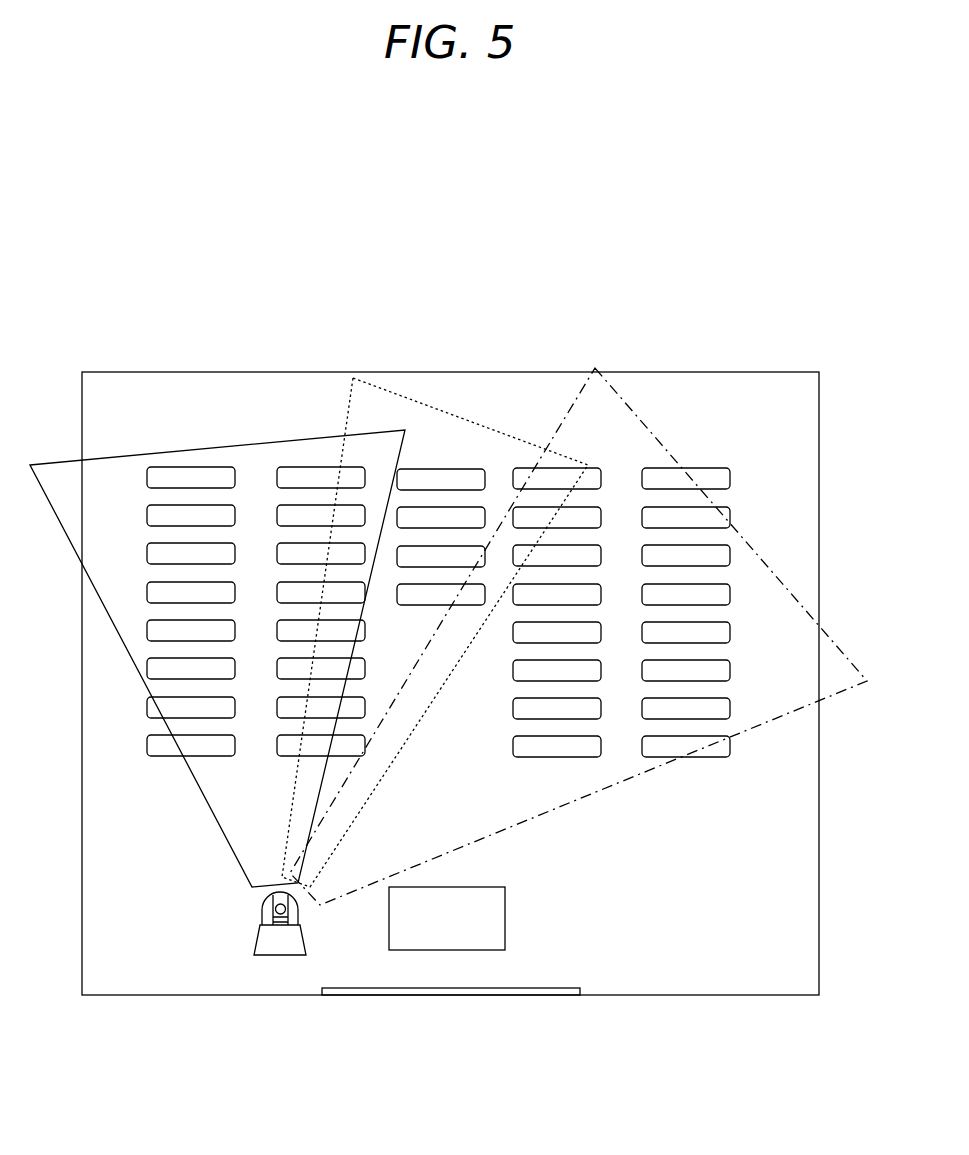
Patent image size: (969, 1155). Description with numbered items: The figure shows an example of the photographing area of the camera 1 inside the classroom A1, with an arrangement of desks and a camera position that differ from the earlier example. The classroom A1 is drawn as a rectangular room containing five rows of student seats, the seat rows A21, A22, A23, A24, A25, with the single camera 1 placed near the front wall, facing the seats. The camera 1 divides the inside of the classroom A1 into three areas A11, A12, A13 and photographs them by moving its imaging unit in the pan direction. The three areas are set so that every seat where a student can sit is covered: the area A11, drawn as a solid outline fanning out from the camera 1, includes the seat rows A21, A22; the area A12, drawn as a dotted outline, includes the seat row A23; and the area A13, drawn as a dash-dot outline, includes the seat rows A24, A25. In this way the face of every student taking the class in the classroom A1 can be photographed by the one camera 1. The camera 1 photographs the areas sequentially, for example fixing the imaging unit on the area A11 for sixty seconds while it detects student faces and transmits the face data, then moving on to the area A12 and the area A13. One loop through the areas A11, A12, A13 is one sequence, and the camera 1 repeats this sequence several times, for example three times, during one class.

The camera 1 is at (278, 938).
The classroom A1 is at (191, 371).
The area A11 is at (111, 459).
The area A12 is at (410, 398).
The area A13 is at (788, 590).
The seat row A21 is at (184, 432).
The seat row A22 is at (326, 440).
The seat row A23 is at (445, 446).
The seat row A24 is at (575, 446).
The seat row A25 is at (697, 447).